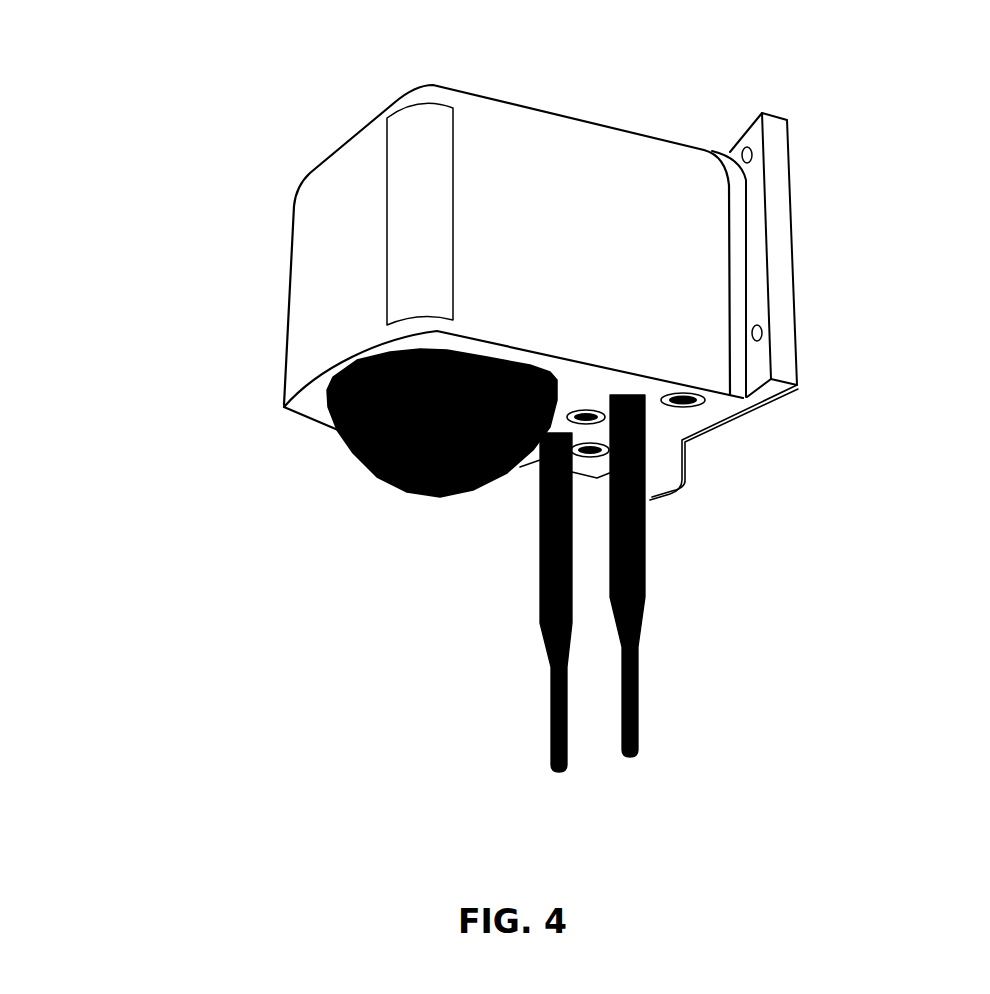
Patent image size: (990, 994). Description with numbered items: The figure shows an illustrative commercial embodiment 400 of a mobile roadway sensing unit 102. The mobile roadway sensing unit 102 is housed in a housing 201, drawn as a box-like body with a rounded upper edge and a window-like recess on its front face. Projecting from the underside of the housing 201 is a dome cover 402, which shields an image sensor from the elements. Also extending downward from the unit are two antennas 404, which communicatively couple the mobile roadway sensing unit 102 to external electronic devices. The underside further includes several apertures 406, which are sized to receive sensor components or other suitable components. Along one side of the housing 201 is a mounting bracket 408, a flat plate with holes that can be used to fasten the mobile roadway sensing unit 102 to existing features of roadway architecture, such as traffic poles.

The commercial embodiment 400 is at (99, 98).
The mobile roadway sensing unit 102 is at (289, 111).
The housing 201 is at (293, 203).
The dome cover 402 is at (342, 440).
The antennas 404 is at (551, 697).
The apertures 406 is at (687, 402).
The mounting bracket 408 is at (785, 305).